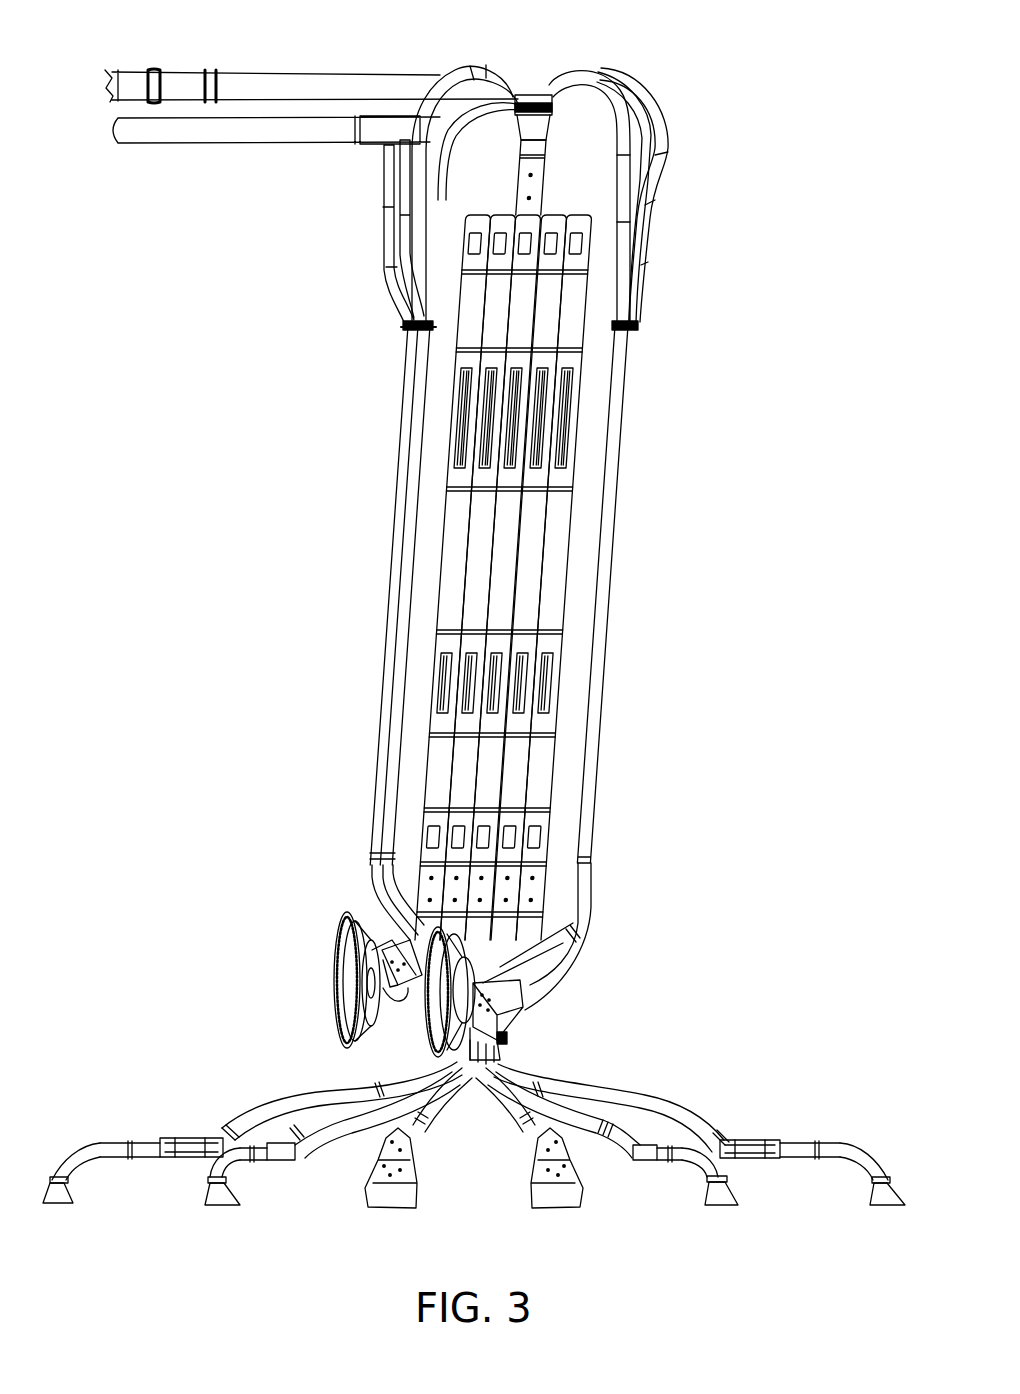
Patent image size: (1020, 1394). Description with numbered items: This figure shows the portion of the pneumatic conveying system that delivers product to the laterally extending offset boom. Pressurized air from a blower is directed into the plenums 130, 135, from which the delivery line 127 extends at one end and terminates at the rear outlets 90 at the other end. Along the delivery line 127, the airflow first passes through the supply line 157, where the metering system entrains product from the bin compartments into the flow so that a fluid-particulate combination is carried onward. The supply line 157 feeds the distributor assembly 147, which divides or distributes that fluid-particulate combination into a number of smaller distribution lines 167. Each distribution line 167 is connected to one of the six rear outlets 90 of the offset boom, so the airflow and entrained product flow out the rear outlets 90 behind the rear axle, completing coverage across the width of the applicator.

The delivery line 127 is at (552, 64).
The plenum 135 is at (410, 957).
The supply line 157 is at (483, 894).
The plenum 130 is at (503, 1016).
The distributor assembly 147 is at (500, 1038).
The rear outlet 90 is at (62, 1205).
The distribution line 167 is at (323, 1157).